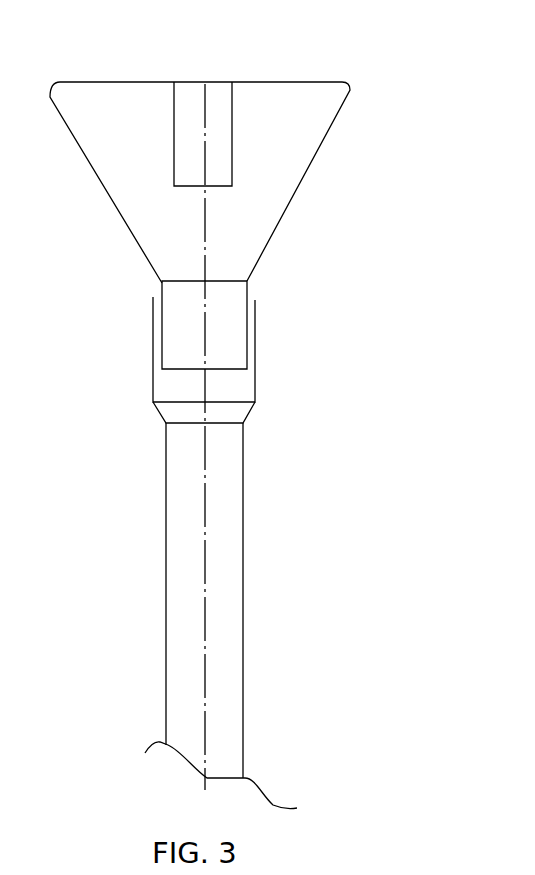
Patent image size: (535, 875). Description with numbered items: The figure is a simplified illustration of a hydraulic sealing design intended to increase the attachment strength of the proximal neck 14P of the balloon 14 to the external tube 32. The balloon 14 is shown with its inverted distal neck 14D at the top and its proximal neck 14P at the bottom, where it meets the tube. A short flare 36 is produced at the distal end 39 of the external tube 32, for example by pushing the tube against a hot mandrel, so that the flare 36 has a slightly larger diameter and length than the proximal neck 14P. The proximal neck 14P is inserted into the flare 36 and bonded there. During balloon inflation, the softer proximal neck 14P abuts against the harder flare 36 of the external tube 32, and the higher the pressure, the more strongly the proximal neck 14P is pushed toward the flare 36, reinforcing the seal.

The balloon 14 is at (125, 172).
The inverted distal neck 14D is at (181, 128).
The proximal neck 14P is at (165, 291).
The flare 36 is at (153, 361).
The distal end 39 is at (163, 390).
The external tube 32 is at (166, 490).